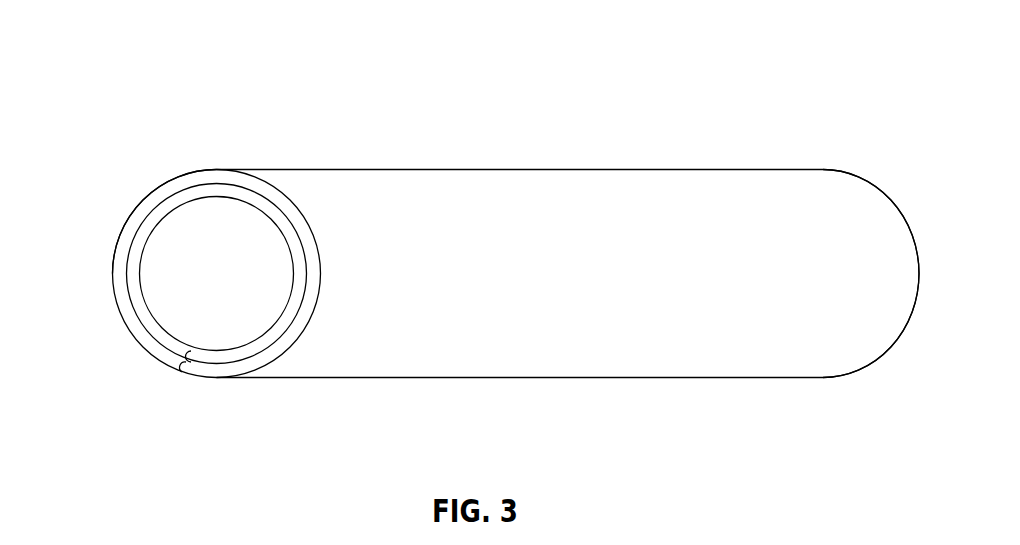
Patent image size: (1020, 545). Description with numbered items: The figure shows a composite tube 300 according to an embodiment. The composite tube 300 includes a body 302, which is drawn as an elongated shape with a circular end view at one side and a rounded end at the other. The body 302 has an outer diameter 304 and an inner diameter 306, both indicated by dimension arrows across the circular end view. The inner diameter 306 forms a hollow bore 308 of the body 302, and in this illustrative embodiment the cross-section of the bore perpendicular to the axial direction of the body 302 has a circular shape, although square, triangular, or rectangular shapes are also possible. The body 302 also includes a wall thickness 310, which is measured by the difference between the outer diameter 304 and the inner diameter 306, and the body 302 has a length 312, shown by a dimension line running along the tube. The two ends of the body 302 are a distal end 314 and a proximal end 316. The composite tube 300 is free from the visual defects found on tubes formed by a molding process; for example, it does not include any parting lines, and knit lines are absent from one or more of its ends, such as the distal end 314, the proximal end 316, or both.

The composite tube 300 is at (597, 42).
The body 302 is at (506, 169).
The outer diameter 304 is at (372, 273).
The inner diameter 306 is at (216, 198).
The hollow bore 308 is at (166, 296).
The wall thickness 310 is at (180, 366).
The length 312 is at (919, 310).
The distal end 314 is at (815, 160).
The proximal end 316 is at (221, 159).